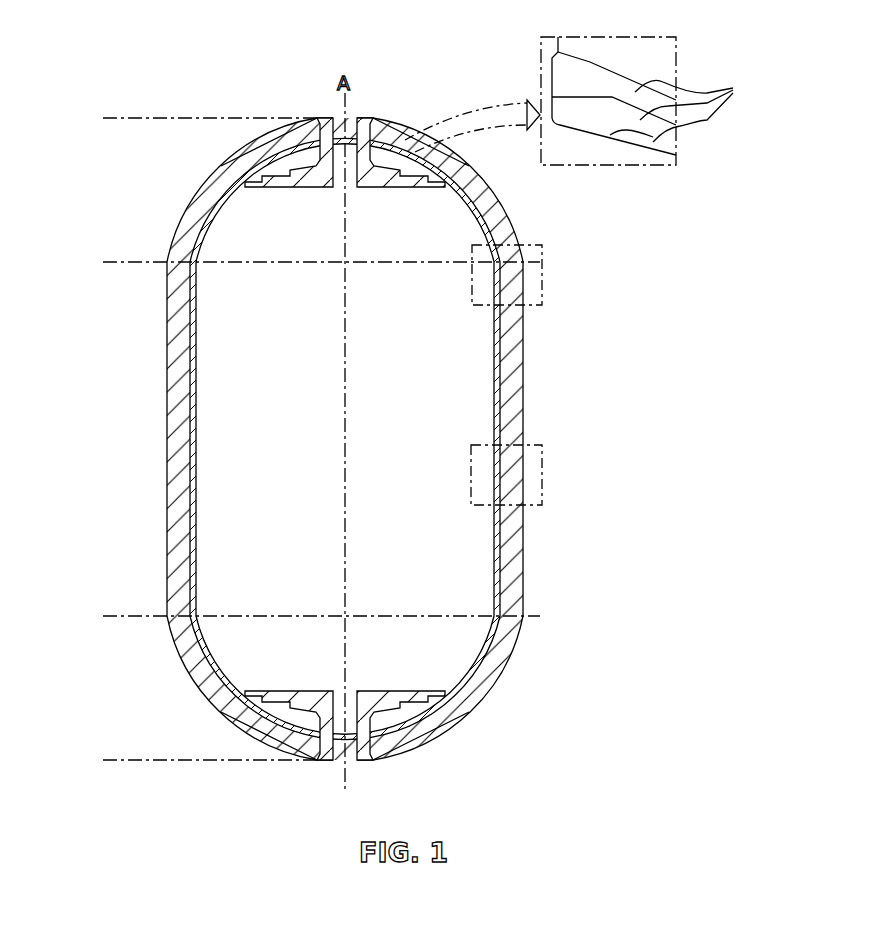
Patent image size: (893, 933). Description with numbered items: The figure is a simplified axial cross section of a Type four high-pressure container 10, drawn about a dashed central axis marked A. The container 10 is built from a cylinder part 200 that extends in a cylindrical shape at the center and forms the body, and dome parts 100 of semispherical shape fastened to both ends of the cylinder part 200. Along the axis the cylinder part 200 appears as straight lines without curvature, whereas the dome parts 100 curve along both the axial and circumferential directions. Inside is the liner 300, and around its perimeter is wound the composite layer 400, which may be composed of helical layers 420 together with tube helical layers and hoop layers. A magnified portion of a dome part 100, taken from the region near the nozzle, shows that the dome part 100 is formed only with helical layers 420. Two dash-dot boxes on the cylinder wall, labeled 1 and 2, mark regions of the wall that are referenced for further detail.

The high-pressure container 10 is at (411, 440).
The dome part 100 is at (103, 760).
The cylinder part 200 is at (103, 262).
The liner 300 is at (490, 353).
The composite layer 400 is at (528, 353).
The helical layer 420 is at (589, 101).
The detail region 1 is at (510, 270).
The detail region 2 is at (509, 470).